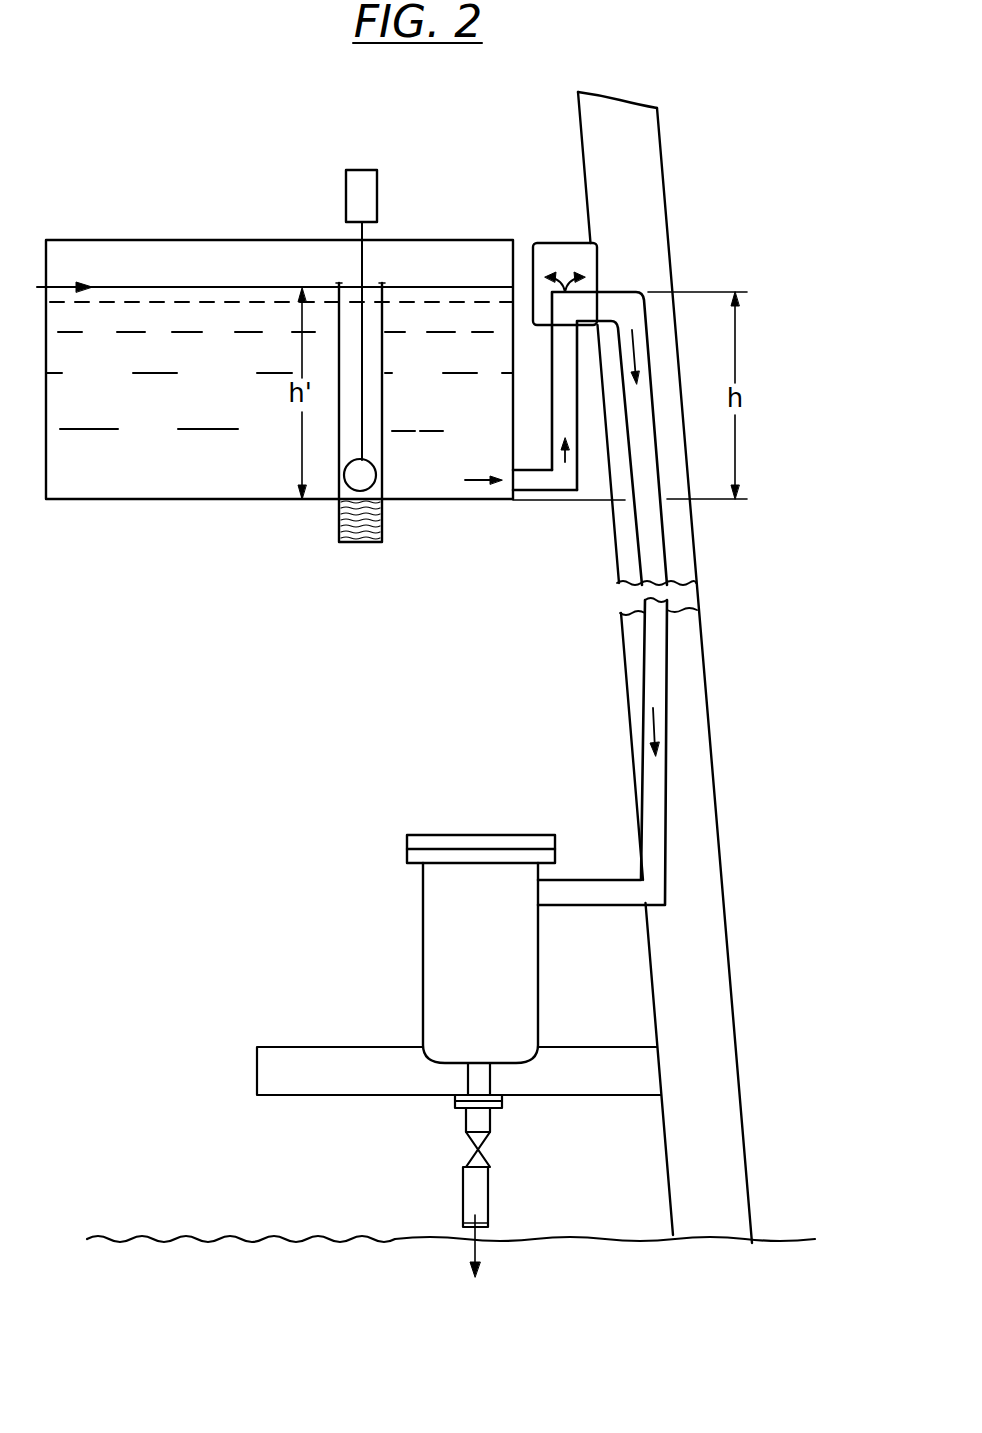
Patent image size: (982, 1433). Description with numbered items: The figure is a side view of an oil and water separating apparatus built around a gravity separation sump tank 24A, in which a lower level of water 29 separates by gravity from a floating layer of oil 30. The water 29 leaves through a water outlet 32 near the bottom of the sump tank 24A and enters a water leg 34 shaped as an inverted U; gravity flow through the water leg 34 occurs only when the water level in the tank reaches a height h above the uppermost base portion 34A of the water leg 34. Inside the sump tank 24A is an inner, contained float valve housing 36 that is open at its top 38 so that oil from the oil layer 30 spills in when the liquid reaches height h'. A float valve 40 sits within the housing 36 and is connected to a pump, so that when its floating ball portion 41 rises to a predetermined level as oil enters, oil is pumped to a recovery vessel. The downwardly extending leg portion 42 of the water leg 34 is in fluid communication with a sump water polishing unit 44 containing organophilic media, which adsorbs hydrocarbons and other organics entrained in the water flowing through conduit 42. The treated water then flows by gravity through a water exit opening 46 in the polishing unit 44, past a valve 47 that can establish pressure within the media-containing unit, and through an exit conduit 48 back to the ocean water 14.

The ocean water 14 is at (291, 1250).
The gravity separation sump tank 24A is at (494, 180).
The water 29 is at (450, 415).
The floating layer of oil 30 is at (440, 287).
The water outlet 32 is at (514, 478).
The water leg 34 is at (578, 393).
The base portion of water leg 34A is at (603, 320).
The float valve housing 36 is at (370, 355).
The top of float valve housing 38 is at (340, 286).
The float valve 40 is at (363, 188).
The floating ball portion 41 is at (371, 466).
The downwardly extending leg portion 42 is at (662, 632).
The sump water polishing unit 44 is at (460, 941).
The water exit opening 46 is at (483, 1065).
The valve 47 is at (491, 1142).
The exit conduit 48 is at (476, 1180).